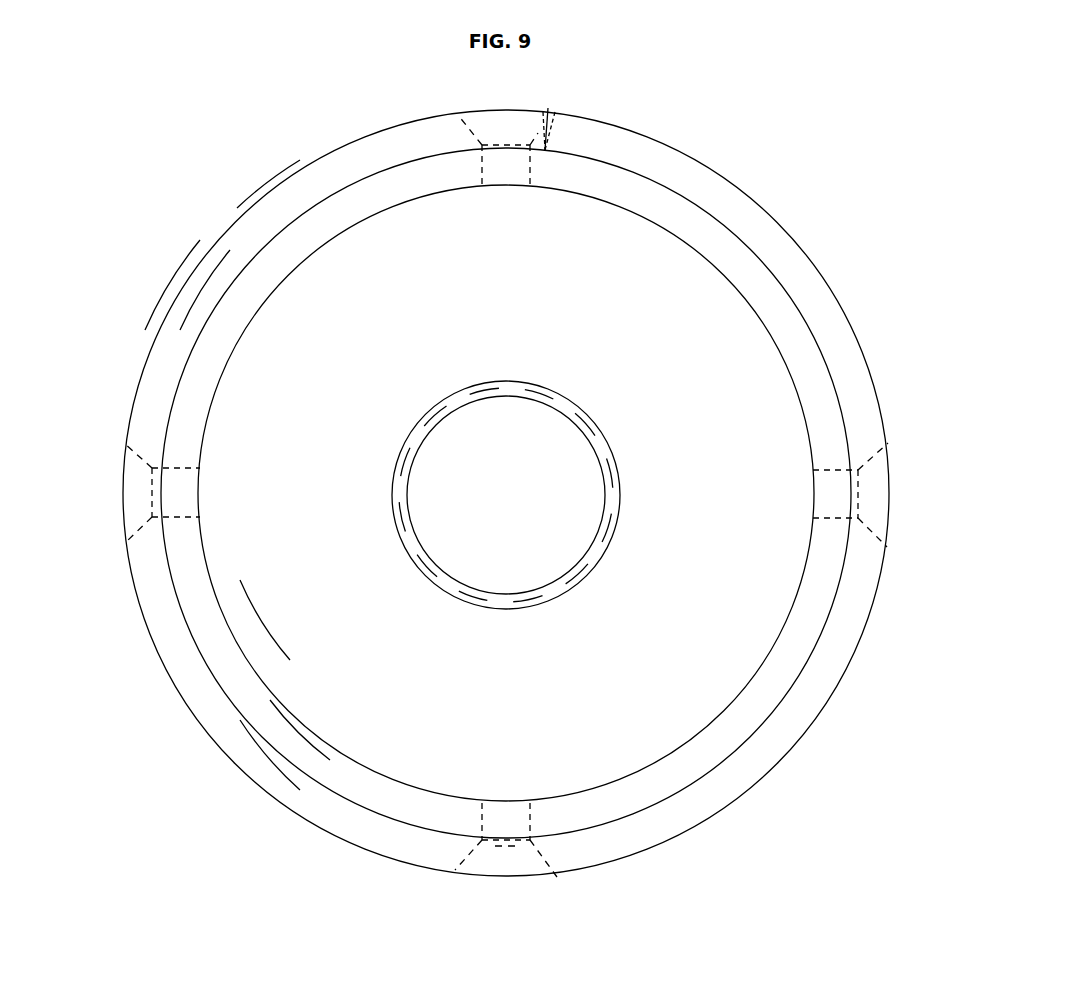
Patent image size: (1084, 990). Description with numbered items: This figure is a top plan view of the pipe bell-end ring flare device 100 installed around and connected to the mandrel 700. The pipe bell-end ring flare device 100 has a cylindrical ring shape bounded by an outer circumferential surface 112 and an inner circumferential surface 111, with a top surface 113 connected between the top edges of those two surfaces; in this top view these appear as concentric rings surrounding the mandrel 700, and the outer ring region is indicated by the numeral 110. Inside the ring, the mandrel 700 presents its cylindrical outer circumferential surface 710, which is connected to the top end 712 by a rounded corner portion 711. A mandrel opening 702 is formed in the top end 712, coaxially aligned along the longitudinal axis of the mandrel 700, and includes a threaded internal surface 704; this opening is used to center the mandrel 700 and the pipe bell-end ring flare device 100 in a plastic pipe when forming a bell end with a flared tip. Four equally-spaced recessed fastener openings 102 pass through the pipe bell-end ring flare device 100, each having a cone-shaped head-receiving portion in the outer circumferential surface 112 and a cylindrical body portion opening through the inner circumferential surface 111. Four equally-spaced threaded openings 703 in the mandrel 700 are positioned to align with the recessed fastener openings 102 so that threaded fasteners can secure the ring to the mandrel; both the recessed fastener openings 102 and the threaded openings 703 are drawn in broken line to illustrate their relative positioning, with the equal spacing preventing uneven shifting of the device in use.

The pipe bell-end ring flare device 100 is at (502, 521).
The outer ring 110 is at (728, 822).
The inner circumferential surface 111 is at (223, 300).
The outer circumferential surface 112 is at (215, 245).
The top surface 113 is at (178, 330).
The cylindrical outer circumferential surface 710 is at (267, 245).
The rounded corner portion 711 is at (268, 713).
The top end 712 is at (307, 608).
The threaded internal surface 704 is at (435, 582).
The mandrel opening 702 is at (557, 592).
The threaded openings 703 is at (511, 170).
The recessed fastener openings 102 is at (488, 125).
The mandrel 700 is at (550, 104).